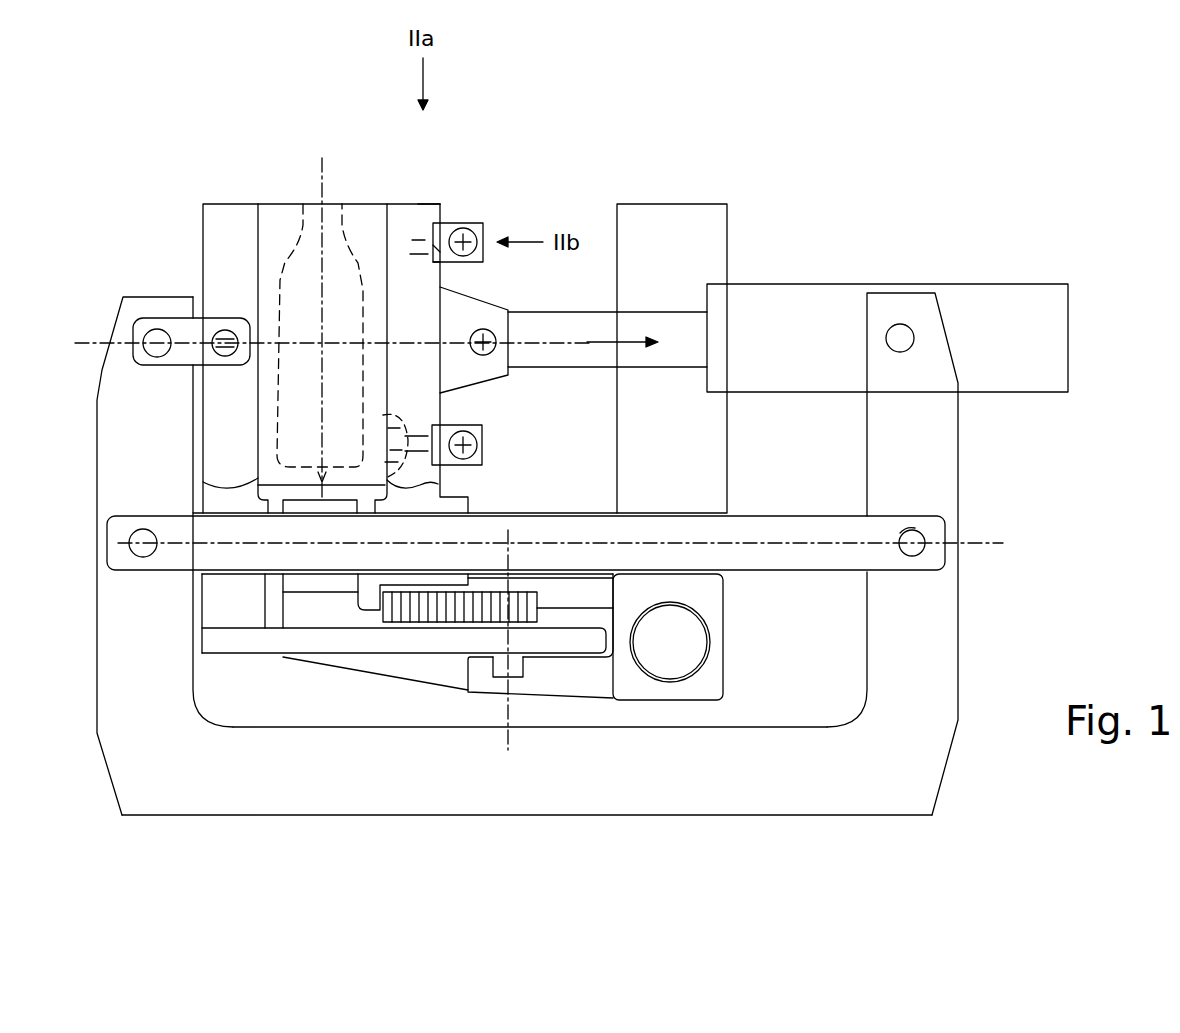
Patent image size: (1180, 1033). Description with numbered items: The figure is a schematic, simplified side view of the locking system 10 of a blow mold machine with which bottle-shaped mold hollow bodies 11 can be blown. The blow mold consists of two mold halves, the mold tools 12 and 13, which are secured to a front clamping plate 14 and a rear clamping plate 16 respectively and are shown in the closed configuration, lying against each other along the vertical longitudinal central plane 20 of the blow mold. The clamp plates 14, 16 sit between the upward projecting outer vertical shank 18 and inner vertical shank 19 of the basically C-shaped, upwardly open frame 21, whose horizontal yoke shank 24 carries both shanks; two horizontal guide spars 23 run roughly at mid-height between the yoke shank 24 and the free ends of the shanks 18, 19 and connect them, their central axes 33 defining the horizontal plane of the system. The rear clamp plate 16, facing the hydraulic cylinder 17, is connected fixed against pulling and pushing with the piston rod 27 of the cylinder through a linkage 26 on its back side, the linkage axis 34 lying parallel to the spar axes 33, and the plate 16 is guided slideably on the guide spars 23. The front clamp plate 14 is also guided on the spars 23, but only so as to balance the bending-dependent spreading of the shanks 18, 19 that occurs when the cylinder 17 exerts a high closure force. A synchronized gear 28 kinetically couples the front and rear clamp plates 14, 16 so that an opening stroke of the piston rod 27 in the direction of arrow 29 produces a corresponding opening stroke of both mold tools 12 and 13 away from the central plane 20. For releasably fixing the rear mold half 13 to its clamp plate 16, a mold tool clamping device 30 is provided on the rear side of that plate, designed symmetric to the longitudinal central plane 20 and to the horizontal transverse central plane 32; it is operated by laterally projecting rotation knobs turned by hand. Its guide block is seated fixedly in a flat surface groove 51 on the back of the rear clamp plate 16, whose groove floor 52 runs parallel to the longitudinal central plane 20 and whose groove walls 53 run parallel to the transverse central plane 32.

The locking system 10 is at (156, 170).
The mold hollow body 11 is at (300, 272).
The mold tool 12 is at (279, 204).
The mold tool 13 is at (375, 204).
The clamping plate 14 is at (228, 204).
The clamping plate 16 is at (420, 204).
The hydraulic cylinder 17 is at (818, 284).
The outer vertical shank 18 is at (132, 436).
The inner vertical shank 19 is at (938, 452).
The vertical longitudinal central plane 20 is at (324, 156).
The frame 21 is at (610, 818).
The guide spar 23 is at (795, 553).
The yoke shank 24 is at (493, 797).
The linkage 26 is at (505, 312).
The piston rod 27 is at (570, 357).
The synchronized gear 28 is at (535, 608).
The arrow 29 is at (638, 347).
The mold tool clamping device 30 is at (506, 200).
The horizontal transverse central plane 32 is at (92, 345).
The central axis 33 is at (983, 543).
The linkage axis 34 is at (485, 355).
The surface groove 51 is at (430, 246).
The groove floor 52 is at (433, 263).
The groove wall 53 is at (422, 203).